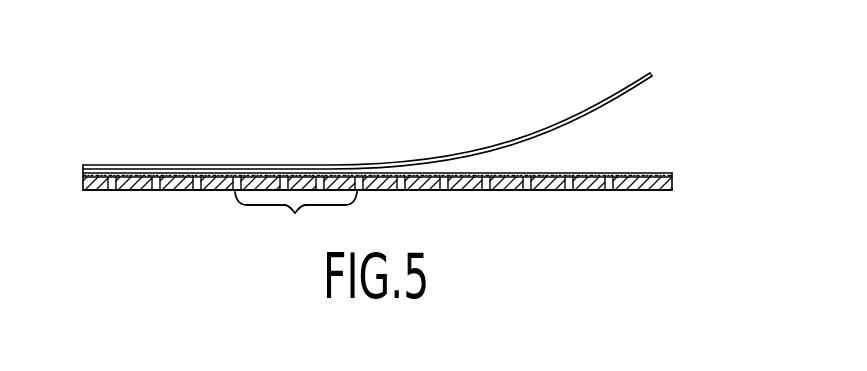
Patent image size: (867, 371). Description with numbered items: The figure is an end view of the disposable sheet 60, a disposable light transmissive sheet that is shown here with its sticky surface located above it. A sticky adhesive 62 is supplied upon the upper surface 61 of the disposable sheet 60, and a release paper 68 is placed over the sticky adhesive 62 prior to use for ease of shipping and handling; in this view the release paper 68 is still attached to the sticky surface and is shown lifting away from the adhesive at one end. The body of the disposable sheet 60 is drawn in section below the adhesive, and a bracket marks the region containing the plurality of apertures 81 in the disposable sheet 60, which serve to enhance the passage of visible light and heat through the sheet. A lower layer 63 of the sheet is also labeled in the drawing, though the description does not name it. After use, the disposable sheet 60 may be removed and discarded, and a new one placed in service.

The disposable sheet 60 is at (143, 210).
The upper surface 61 is at (663, 173).
The sticky adhesive 62 is at (623, 173).
The base layer 63 is at (635, 191).
The release paper 68 is at (593, 57).
The apertures 81 is at (296, 217).